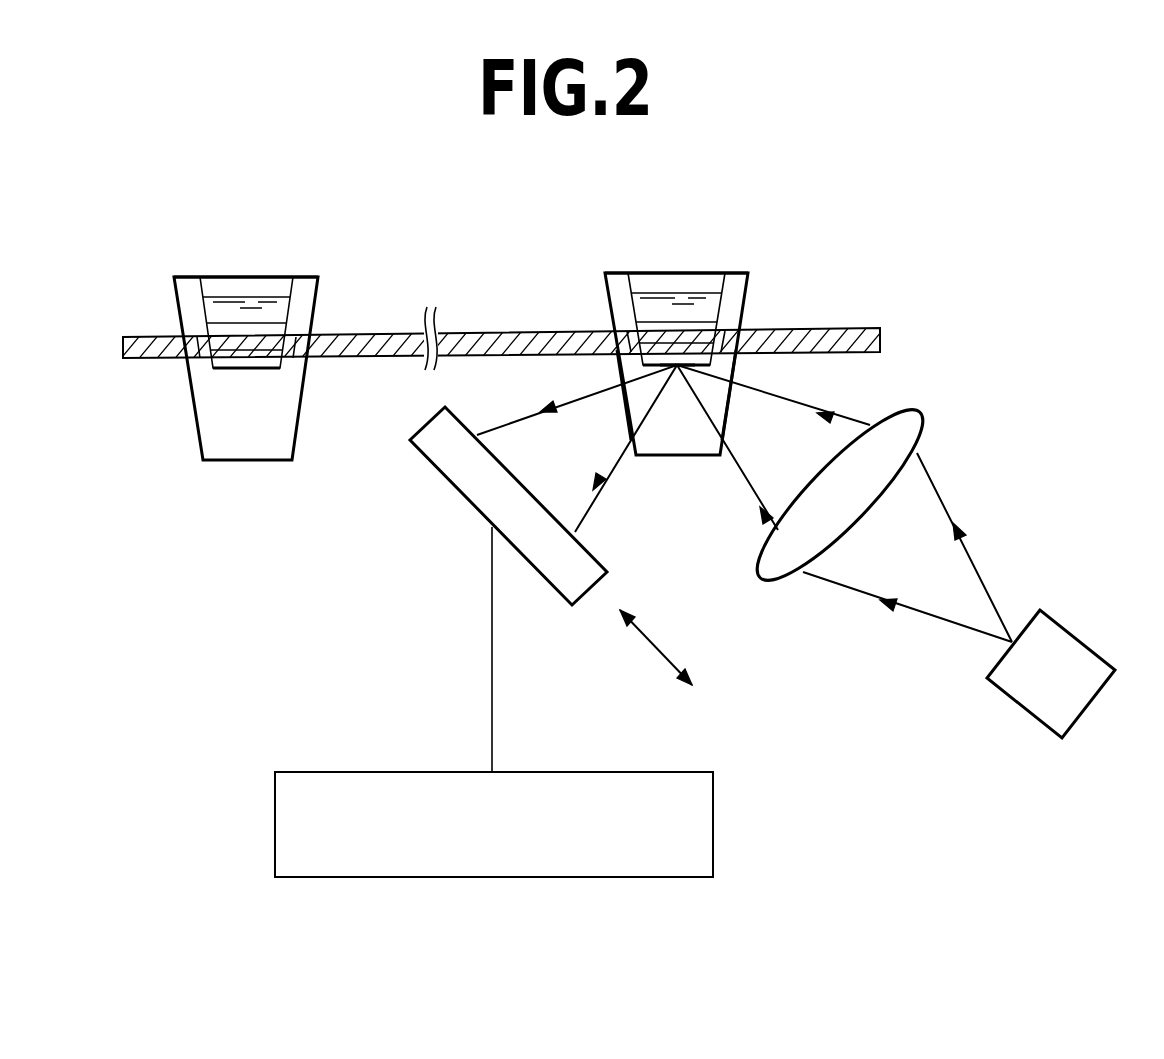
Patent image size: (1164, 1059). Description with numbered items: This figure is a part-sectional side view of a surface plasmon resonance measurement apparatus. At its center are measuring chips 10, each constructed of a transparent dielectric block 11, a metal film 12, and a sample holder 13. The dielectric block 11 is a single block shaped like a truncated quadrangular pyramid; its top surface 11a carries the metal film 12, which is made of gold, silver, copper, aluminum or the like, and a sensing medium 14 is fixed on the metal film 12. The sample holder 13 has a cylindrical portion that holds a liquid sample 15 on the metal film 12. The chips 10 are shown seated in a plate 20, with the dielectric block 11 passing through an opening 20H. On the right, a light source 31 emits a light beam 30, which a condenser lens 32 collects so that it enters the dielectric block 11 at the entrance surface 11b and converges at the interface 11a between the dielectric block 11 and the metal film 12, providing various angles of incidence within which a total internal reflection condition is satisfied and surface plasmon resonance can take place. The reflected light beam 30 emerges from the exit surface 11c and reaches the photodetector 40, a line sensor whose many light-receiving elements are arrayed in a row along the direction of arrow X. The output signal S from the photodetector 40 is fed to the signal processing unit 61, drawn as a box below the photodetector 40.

The measuring chip 10 is at (235, 255).
The dielectric block 11 is at (210, 438).
The top surface 11a is at (657, 363).
The entrance surface 11b is at (725, 420).
The exit surface 11c is at (615, 413).
The metal film 12 is at (223, 360).
The sample holder 13 is at (188, 277).
The sensing medium 14 is at (223, 333).
The liquid sample 15 is at (262, 298).
The holding plate 20 is at (393, 333).
The hole of holding plate 20H is at (300, 355).
The light beam 30 is at (970, 555).
The light source 31 is at (1062, 640).
The condenser lens 32 is at (917, 430).
The photodetector 40 is at (458, 492).
The signal processing unit 61 is at (718, 827).
The output signal S is at (492, 683).
The arrow X is at (663, 657).